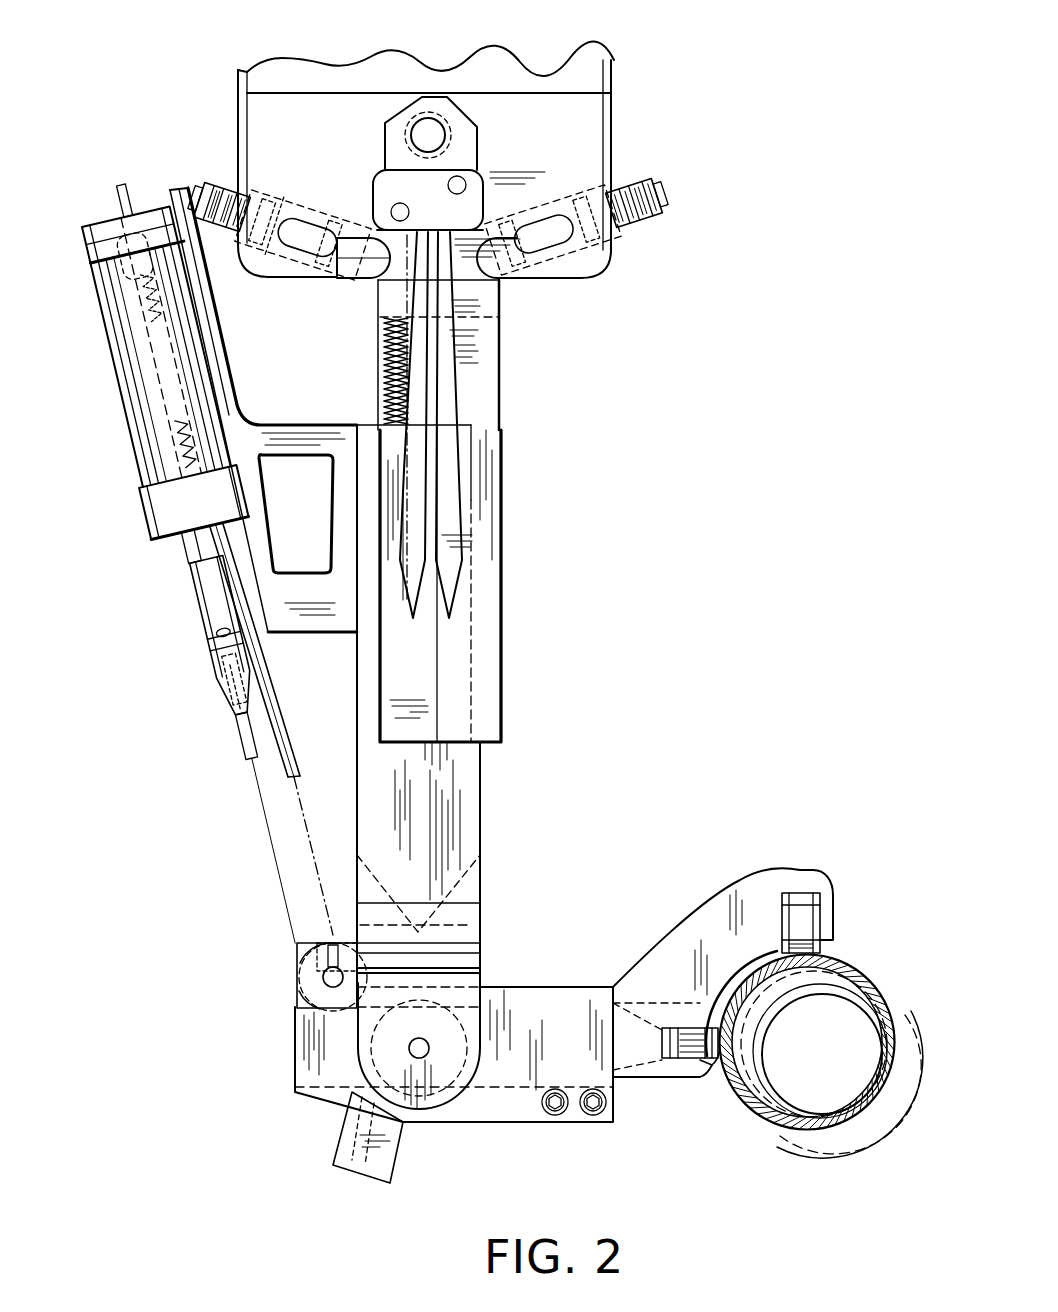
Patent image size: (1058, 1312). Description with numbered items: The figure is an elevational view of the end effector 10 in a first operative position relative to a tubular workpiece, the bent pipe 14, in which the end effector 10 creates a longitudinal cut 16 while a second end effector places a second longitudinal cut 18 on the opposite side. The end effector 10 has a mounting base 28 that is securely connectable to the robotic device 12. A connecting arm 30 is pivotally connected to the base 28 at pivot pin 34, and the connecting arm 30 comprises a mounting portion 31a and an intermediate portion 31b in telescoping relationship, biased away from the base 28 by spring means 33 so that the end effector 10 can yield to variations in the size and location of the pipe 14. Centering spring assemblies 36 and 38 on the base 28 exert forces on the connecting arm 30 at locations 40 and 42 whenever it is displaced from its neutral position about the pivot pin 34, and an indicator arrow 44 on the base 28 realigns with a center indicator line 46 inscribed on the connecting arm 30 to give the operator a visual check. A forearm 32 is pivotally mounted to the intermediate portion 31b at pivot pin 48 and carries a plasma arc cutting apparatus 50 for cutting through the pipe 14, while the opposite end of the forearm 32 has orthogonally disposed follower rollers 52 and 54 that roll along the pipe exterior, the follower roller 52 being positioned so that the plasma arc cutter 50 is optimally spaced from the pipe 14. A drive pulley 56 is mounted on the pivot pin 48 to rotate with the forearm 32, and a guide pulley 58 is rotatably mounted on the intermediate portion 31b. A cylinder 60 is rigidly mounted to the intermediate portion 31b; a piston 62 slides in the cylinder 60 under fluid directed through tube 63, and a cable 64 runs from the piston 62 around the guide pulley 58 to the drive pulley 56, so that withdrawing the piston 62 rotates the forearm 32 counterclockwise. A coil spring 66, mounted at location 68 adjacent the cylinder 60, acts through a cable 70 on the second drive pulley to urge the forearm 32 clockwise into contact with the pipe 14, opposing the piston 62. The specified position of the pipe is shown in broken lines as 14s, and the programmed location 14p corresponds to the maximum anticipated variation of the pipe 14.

The end effector 10 is at (256, 1047).
The robotic device 12 is at (604, 82).
The bent pipe 14 is at (852, 1120).
The programmed location of the pipe 14p is at (818, 1160).
The specified position of the pipe 14s is at (893, 1108).
The longitudinal cut 16 is at (717, 1064).
The second longitudinal cut 18 is at (895, 1042).
The mounting base 28 is at (616, 144).
The connecting arm 30 is at (513, 705).
The mounting portion 31a is at (501, 544).
The intermediate portion 31b is at (481, 836).
The forearm 32 is at (729, 880).
The spring means 33 is at (380, 350).
The pivot pin 34 is at (427, 130).
The centering spring assembly 36 is at (248, 160).
The centering spring assembly 38 is at (613, 243).
The location 40 is at (365, 270).
The location 42 is at (505, 270).
The indicator arrow 44 is at (440, 392).
The center indicator line 46 is at (438, 652).
The pivot pin 48 is at (425, 1042).
The plasma arc cutting apparatus 50 is at (620, 1085).
The follower roller 52 is at (680, 1030).
The follower roller 54 is at (810, 918).
The drive pulley 56 is at (432, 1105).
The guide pulley 58 is at (292, 980).
The cylinder 60 is at (126, 422).
The piston 62 is at (188, 552).
The tube 63 is at (121, 204).
The cable 64 is at (243, 727).
The coil spring 66 is at (150, 310).
The location 68 is at (140, 225).
The cable 70 is at (290, 752).